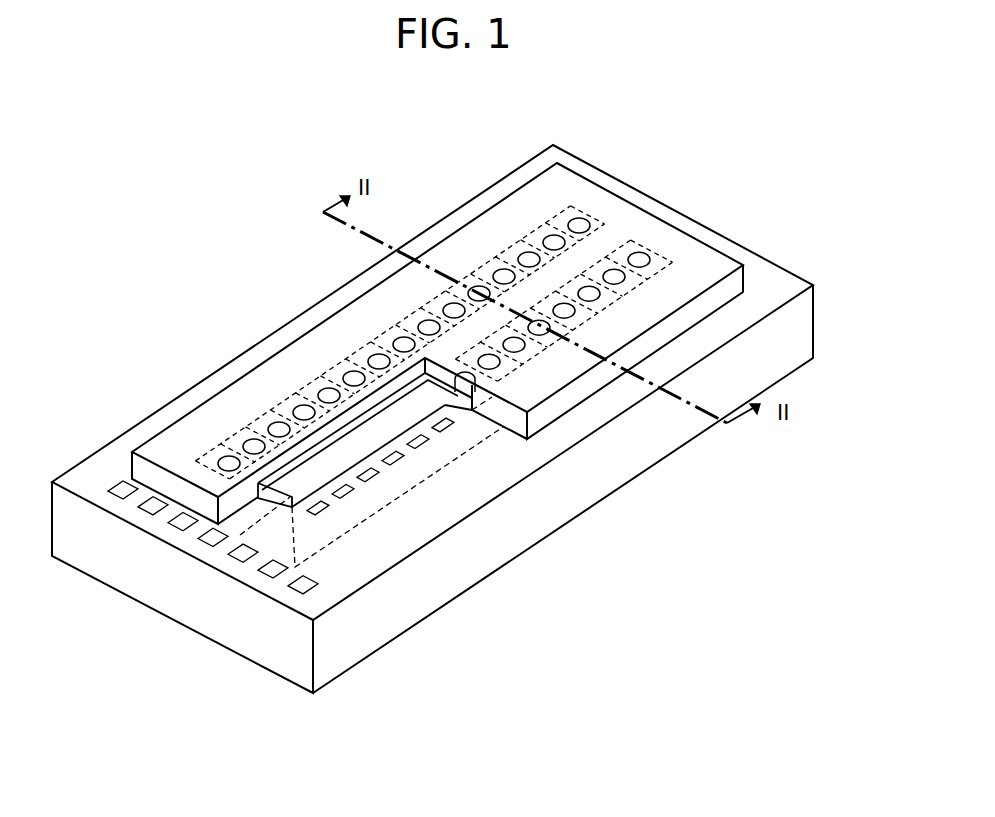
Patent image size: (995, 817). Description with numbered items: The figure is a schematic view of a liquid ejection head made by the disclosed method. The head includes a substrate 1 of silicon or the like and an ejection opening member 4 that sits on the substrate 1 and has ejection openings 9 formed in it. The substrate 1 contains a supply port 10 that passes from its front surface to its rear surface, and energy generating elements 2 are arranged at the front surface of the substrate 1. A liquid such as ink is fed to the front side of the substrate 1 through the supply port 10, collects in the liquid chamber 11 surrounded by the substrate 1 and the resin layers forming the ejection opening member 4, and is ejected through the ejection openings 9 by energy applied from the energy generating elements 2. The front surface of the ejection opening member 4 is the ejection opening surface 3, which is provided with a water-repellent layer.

The substrate 1 is at (612, 176).
The energy generating elements 2 is at (350, 490).
The ejection opening surface 3 is at (655, 235).
The ejection opening member 4 is at (735, 290).
The ejection openings 9 is at (482, 358).
The supply port 10 is at (288, 497).
The liquid chamber 11 is at (397, 403).